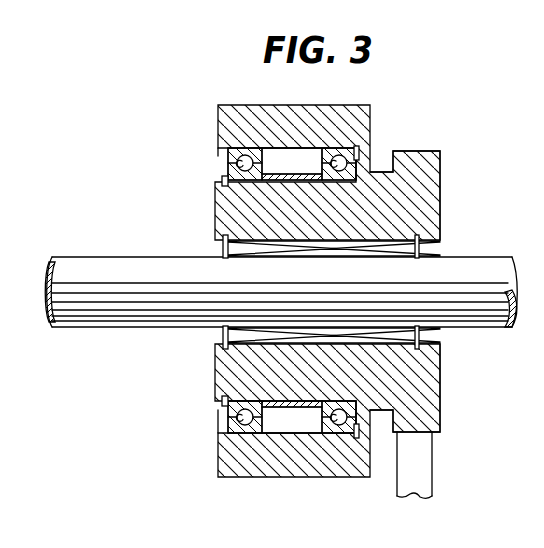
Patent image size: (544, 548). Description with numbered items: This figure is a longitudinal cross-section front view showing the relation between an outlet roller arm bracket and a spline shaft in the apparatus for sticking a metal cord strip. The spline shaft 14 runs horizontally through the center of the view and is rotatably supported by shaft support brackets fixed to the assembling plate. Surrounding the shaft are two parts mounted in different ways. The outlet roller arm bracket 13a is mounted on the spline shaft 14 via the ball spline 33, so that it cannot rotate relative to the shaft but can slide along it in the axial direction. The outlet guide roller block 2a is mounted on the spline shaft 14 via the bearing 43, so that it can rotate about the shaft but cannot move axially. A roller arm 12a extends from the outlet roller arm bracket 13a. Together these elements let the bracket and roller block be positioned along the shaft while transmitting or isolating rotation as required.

The outlet guide roller block 2a is at (369, 105).
The outlet roller arm bracket 13a is at (440, 151).
The bearing 43 is at (228, 163).
The ball spline 33 is at (393, 253).
The spline shaft 14 is at (489, 257).
The roller arm 12a is at (432, 487).